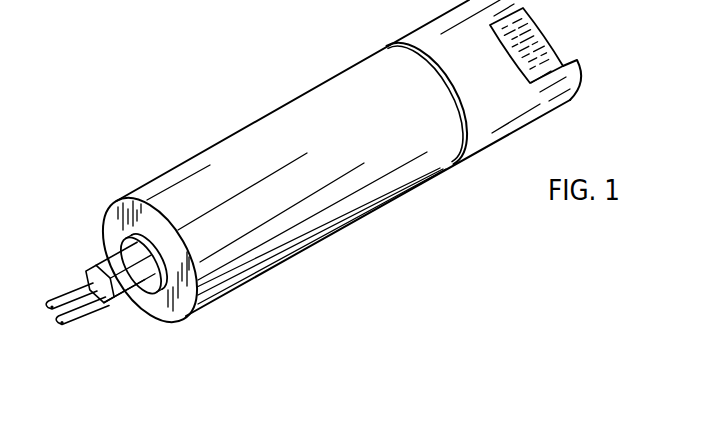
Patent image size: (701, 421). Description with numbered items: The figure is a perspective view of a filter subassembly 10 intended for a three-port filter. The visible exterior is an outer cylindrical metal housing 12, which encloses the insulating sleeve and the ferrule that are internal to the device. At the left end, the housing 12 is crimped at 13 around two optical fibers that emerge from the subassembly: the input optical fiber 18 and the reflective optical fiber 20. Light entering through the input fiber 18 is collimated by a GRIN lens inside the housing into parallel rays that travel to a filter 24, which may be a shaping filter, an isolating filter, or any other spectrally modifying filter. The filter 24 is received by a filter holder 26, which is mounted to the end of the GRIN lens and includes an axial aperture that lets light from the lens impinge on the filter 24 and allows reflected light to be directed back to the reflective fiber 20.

The filter subassembly 10 is at (240, 124).
The outer cylindrical metal housing 12 is at (303, 251).
The crimp 13 is at (105, 249).
The input optical fiber 18 is at (66, 292).
The reflective optical fiber 20 is at (88, 313).
The filter 24 is at (543, 42).
The filter holder 26 is at (412, 32).